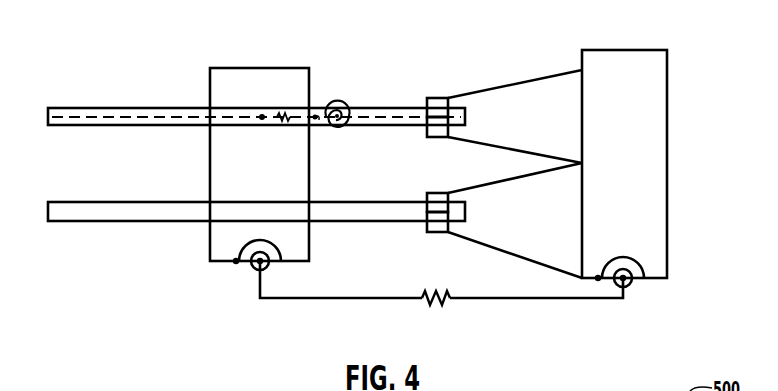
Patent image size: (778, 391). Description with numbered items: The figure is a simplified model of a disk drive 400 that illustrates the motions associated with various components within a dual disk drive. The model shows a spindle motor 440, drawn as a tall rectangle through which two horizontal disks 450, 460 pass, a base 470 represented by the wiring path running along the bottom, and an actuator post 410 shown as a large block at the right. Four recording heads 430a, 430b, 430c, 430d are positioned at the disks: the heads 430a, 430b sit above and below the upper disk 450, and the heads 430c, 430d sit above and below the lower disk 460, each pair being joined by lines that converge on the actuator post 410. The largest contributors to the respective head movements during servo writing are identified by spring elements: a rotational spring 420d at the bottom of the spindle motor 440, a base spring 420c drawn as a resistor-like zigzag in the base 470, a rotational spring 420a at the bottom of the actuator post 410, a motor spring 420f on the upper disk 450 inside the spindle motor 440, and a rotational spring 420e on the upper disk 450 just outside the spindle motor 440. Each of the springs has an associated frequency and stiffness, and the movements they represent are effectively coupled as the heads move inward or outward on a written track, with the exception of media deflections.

The disk drive 400 is at (519, 38).
The actuator post 410 is at (657, 133).
The rotational spring 420a is at (640, 263).
The base spring 420c is at (433, 308).
The rotational spring 420d is at (253, 270).
The rotational spring 420e is at (335, 101).
The motor spring 420f is at (286, 113).
The recording head 430a is at (440, 98).
The recording head 430b is at (440, 137).
The recording head 430c is at (438, 193).
The recording head 430d is at (438, 233).
The spindle motor 440 is at (260, 68).
The disk 450 is at (103, 108).
The disk 460 is at (103, 203).
The base 470 is at (536, 320).